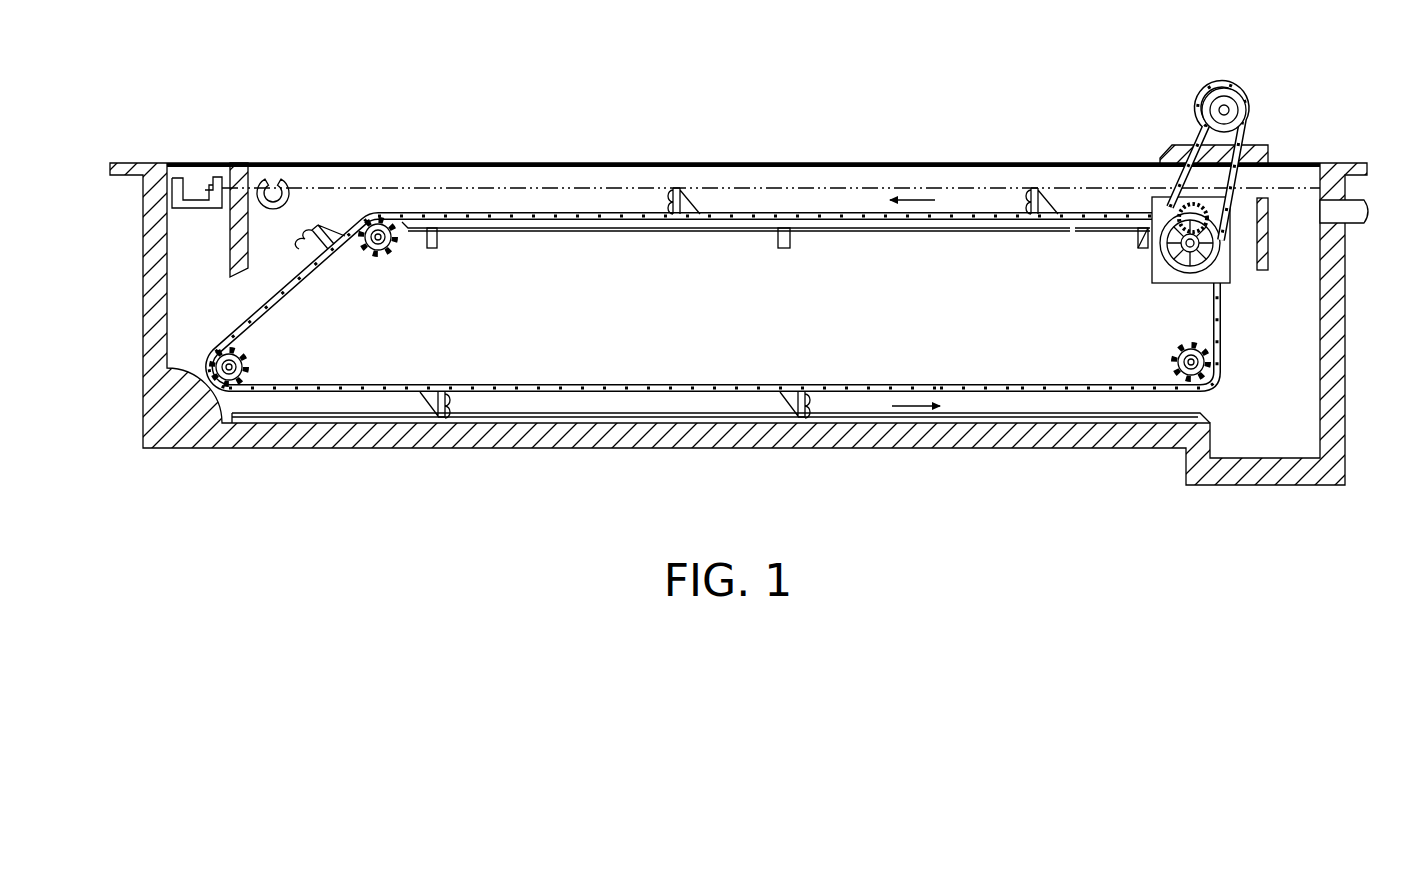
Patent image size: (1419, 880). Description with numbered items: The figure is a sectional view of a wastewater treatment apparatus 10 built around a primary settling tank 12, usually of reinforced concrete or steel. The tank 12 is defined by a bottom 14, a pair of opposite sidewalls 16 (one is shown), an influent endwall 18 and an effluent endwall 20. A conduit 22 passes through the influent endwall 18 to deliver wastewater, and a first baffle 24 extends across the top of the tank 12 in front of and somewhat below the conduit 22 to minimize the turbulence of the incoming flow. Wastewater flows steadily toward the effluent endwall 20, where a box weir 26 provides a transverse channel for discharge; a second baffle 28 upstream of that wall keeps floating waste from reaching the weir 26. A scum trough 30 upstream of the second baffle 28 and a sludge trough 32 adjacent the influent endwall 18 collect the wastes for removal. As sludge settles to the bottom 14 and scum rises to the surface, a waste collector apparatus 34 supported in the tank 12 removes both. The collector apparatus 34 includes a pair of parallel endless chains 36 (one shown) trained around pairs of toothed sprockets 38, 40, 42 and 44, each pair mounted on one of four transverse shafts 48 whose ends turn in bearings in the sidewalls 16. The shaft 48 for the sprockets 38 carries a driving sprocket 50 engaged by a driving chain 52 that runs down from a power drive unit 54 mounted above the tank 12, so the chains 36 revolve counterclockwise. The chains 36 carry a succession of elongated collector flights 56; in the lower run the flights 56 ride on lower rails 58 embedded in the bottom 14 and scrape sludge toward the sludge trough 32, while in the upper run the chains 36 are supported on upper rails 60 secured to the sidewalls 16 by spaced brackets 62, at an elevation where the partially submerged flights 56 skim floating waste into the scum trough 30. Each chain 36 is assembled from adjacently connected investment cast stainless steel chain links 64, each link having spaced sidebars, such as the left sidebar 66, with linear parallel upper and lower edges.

The wastewater treatment apparatus 10 is at (801, 117).
The settling tank 12 is at (500, 462).
The bottom 14 is at (598, 412).
The sidewalls 16 is at (355, 163).
The influent endwall 18 is at (1335, 430).
The effluent endwall 20 is at (153, 313).
The conduit 22 is at (1352, 208).
The first baffle 24 is at (1263, 270).
The box weir 26 is at (195, 208).
The second baffle 28 is at (240, 163).
The scum trough 30 is at (280, 180).
The sludge trough 32 is at (1262, 450).
The waste collector apparatus 34 is at (1262, 330).
The endless chains 36 is at (546, 372).
The toothed sprocket 38 is at (1165, 252).
The toothed sprocket 40 is at (386, 257).
The toothed sprocket 42 is at (252, 368).
The toothed sprocket 44 is at (1170, 368).
The shafts 48 is at (370, 252).
The driving sprocket 50 is at (1192, 200).
The driving chain 52 is at (1210, 122).
The power drive unit 54 is at (1233, 80).
The collector flights 56 is at (668, 205).
The lower rails 58 is at (1035, 385).
The upper rails 60 is at (570, 228).
The brackets 62 is at (435, 248).
The chain links 64 is at (990, 385).
The left sidebar 66 is at (1040, 205).